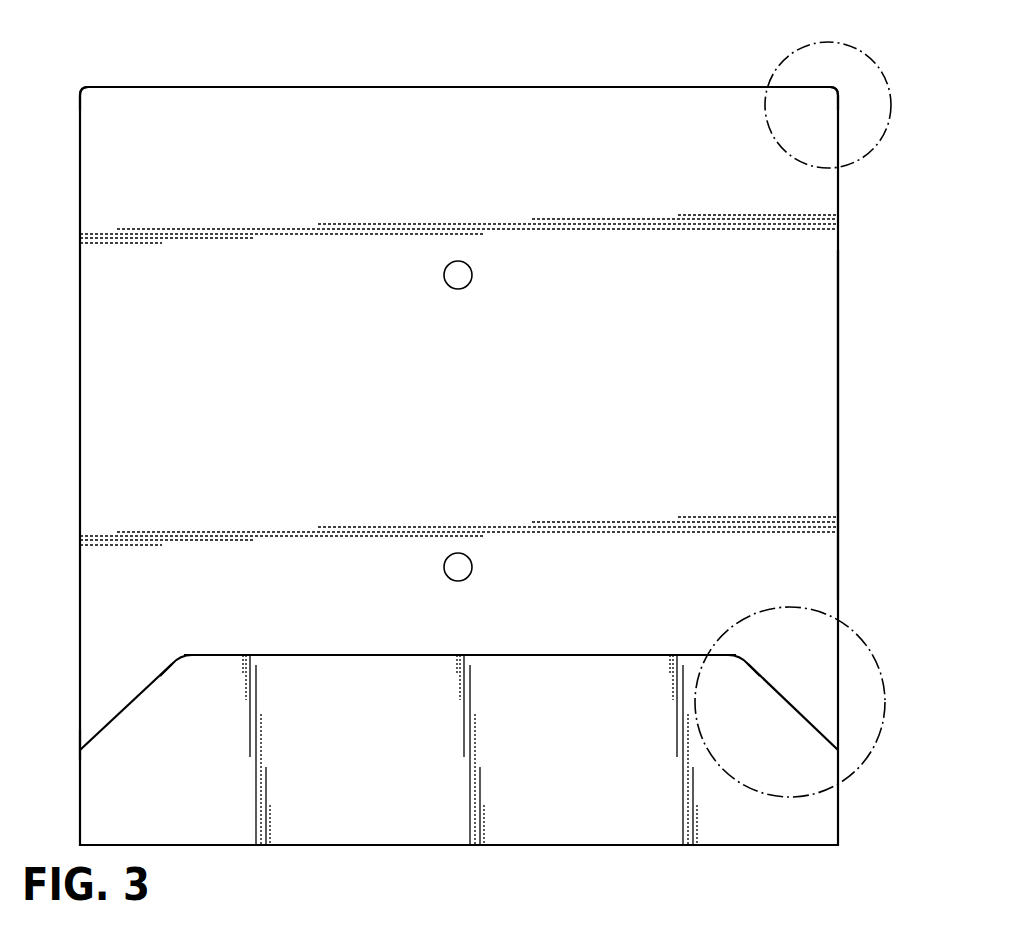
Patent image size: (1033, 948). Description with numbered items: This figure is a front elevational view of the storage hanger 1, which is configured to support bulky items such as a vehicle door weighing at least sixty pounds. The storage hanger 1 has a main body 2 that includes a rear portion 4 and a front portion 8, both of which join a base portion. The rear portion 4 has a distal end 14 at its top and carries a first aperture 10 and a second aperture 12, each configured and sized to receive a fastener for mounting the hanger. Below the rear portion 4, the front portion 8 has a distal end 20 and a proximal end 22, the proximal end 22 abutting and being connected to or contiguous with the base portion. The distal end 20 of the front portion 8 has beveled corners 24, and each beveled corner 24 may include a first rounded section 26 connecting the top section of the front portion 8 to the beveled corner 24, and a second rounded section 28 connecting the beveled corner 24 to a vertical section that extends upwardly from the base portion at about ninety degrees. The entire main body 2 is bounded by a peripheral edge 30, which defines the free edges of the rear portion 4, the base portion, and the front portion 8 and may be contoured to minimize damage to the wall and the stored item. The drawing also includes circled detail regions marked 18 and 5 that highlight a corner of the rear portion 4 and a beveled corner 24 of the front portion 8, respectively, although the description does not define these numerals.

The storage hanger 1 is at (262, 68).
The main body 2 is at (407, 84).
The rear portion 4 is at (625, 160).
The detail circle 5 is at (873, 653).
The front portion 8 is at (717, 805).
The first aperture 10 is at (450, 287).
The second aperture 12 is at (448, 576).
The distal end 14 is at (495, 62).
The rounded corner 18 is at (78, 85).
The distal end 20 is at (573, 640).
The proximal end 22 is at (461, 850).
The beveled corners 24 is at (115, 697).
The first rounded section 26 is at (155, 650).
The second rounded section 28 is at (62, 748).
The peripheral edge 30 is at (842, 408).